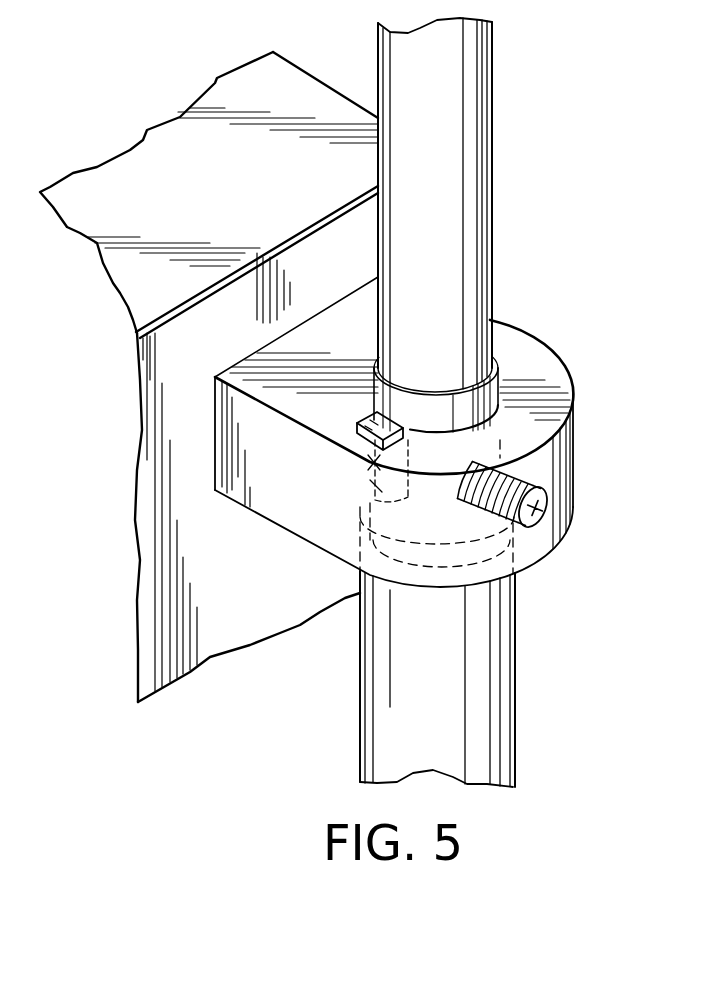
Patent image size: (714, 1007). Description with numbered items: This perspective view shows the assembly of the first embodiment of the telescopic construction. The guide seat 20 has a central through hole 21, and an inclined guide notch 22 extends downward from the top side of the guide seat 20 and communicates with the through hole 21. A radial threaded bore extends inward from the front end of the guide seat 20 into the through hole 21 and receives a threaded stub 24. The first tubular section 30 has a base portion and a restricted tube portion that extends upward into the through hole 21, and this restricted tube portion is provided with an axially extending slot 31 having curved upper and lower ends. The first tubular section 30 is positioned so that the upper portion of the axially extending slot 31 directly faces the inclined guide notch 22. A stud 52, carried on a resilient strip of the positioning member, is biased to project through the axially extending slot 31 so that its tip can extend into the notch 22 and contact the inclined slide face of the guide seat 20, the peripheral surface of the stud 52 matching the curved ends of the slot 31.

The guide seat 20 is at (512, 342).
The central through hole 21 is at (500, 390).
The inclined guide notch 22 is at (363, 463).
The threaded stub 24 is at (555, 511).
The first tubular section 30 is at (372, 683).
The axially extending slot 31 is at (365, 492).
The stud 52 is at (358, 423).